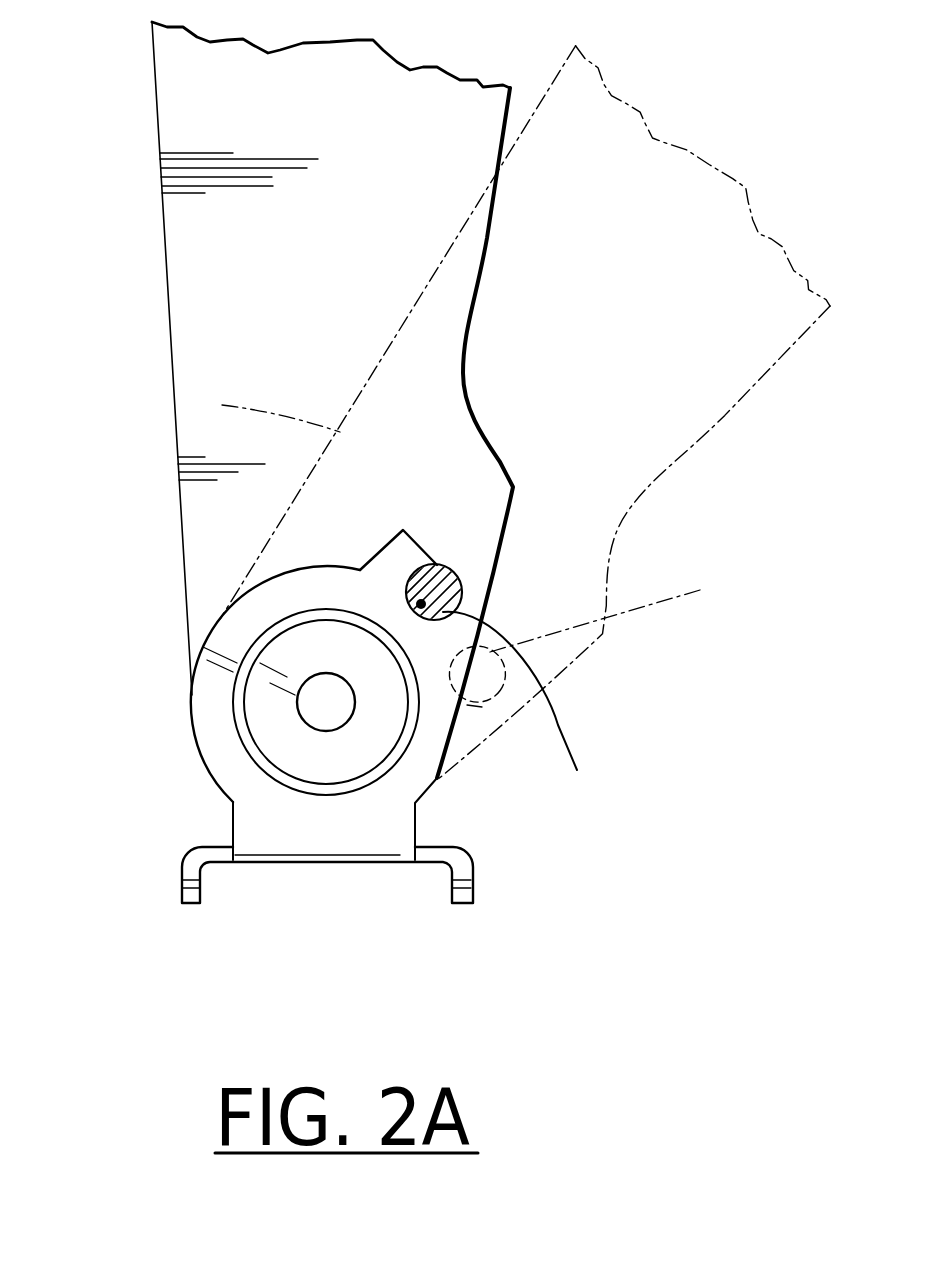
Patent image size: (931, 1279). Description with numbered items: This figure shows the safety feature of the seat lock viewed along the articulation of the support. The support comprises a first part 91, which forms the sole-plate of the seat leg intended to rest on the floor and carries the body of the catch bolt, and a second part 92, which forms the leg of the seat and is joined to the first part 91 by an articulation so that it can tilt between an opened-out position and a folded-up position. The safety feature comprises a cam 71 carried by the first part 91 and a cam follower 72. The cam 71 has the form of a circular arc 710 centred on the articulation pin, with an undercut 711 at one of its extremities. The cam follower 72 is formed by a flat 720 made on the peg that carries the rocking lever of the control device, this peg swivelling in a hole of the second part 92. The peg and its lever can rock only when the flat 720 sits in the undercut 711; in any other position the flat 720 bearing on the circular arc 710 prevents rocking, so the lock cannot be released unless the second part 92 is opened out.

The cam 71 is at (455, 713).
The circular arc 710 is at (460, 740).
The undercut 711 is at (545, 699).
The cam follower 72 is at (448, 598).
The flat 720 is at (433, 567).
The first part 91 is at (197, 858).
The second part 92 is at (210, 400).